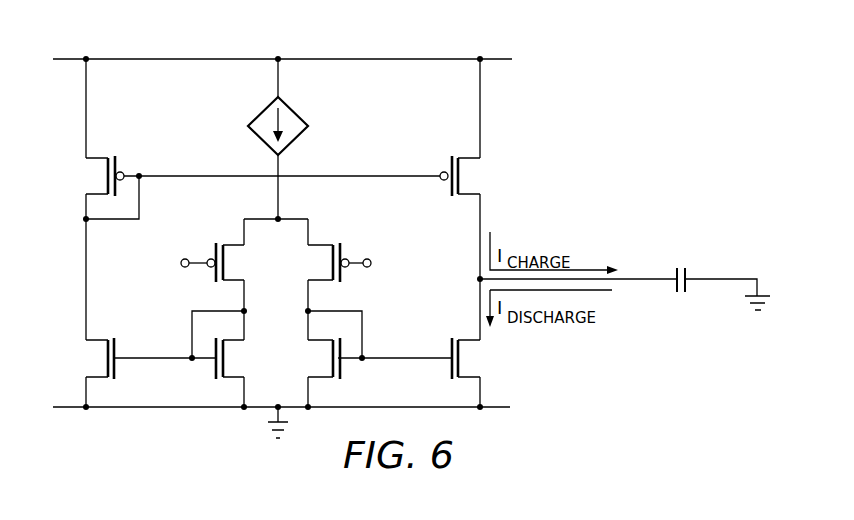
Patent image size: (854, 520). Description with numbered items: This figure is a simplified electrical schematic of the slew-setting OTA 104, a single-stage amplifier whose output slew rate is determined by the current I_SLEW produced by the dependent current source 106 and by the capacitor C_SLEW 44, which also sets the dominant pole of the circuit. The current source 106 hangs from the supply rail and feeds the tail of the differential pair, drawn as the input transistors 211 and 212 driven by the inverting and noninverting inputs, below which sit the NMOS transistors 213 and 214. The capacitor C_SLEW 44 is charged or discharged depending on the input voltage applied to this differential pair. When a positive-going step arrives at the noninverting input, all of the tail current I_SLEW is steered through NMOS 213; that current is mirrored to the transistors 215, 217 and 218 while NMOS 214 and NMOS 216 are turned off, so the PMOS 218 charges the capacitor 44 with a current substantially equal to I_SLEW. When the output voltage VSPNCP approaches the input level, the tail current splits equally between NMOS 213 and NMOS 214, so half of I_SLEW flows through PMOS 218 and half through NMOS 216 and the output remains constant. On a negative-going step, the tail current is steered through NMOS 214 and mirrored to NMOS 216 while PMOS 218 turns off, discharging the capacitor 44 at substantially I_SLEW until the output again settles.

The slew-setting OTA 104 is at (576, 85).
The dependent current source 106 is at (265, 109).
The differential input transistor (inverting) 211 is at (214, 243).
The differential input transistor (non-inverting) 212 is at (336, 243).
The NMOS 213 is at (214, 374).
The NMOS 214 is at (342, 374).
The transistor 215 is at (116, 350).
The NMOS 216 is at (449, 350).
The transistor 217 is at (119, 165).
The PMOS 218 is at (449, 165).
The capacitor C_SLEW 44 is at (681, 293).